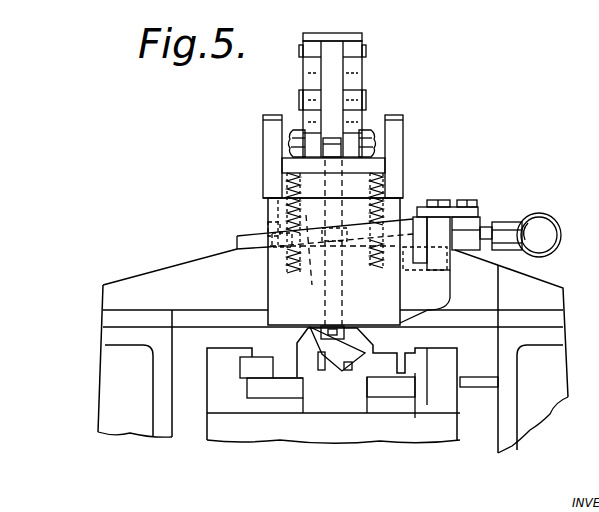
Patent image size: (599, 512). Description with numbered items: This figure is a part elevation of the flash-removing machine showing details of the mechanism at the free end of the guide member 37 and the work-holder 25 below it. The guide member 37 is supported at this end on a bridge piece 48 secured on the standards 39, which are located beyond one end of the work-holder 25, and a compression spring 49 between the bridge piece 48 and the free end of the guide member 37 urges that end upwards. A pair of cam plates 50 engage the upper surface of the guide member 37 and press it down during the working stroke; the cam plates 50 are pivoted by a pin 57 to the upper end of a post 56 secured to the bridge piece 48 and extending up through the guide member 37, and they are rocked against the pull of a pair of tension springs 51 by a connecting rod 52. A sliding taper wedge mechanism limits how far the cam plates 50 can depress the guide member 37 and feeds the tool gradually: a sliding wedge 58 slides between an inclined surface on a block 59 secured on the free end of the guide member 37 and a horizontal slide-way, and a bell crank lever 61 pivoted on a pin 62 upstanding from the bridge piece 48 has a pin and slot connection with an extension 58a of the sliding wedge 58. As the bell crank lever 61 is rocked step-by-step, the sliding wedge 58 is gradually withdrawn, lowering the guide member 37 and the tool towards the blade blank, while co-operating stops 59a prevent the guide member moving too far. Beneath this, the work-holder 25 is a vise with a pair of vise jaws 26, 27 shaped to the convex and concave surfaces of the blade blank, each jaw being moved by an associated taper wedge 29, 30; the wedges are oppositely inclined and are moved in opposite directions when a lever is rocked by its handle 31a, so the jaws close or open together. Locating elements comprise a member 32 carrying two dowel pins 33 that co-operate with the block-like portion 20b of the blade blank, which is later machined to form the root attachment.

The connecting rod 52 is at (328, 35).
The cam plates 50 is at (310, 72).
The pin 57 is at (302, 133).
The post 56 is at (328, 155).
The tension springs 51 is at (300, 138).
The guide member 37 is at (393, 127).
The compression spring 49 is at (415, 195).
The block 59 is at (268, 222).
The sliding wedge 58 is at (247, 238).
The bridge piece 48 is at (187, 288).
The co-operating stops 59a is at (302, 265).
The block-like portion 20b is at (345, 348).
The pin 62 is at (430, 203).
The bell crank lever 61 is at (475, 209).
The extension of the sliding wedge 58a is at (490, 222).
The handle 31a is at (477, 378).
The standards 39 is at (130, 412).
The taper wedge 29 is at (253, 367).
The vise jaw 26 is at (287, 372).
The dowel pins 33 is at (308, 349).
The work-holder 25 is at (347, 367).
The member 32 is at (352, 405).
The vise jaw 27 is at (368, 355).
The taper wedge 30 is at (422, 368).